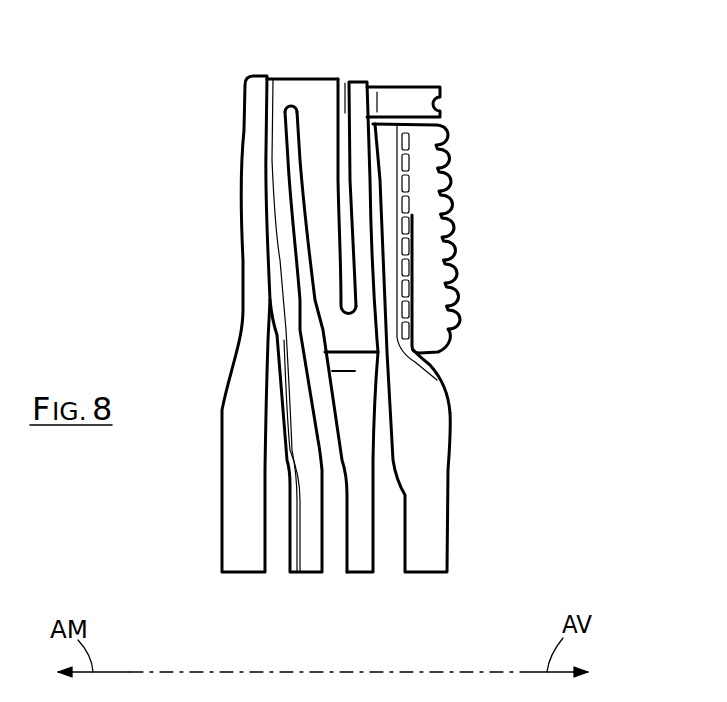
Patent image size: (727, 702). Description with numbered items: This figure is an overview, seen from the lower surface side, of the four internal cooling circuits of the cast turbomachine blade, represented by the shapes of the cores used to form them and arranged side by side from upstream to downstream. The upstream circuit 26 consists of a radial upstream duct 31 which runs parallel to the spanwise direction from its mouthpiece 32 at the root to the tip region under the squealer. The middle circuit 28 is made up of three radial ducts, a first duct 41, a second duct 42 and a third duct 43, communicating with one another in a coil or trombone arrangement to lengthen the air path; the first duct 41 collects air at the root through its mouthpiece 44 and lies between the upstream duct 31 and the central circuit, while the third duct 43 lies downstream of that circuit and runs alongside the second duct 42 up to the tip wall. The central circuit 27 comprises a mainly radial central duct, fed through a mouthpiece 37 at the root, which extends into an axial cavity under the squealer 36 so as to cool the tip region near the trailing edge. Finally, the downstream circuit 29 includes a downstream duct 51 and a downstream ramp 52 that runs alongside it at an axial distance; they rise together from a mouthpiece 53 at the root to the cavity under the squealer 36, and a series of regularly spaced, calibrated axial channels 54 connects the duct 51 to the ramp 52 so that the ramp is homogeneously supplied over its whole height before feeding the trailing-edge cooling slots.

The upstream circuit 26 is at (212, 73).
The central circuit 27 is at (340, 63).
The middle circuit 28 is at (285, 61).
The downstream circuit 29 is at (499, 119).
The radial upstream duct 31 is at (253, 113).
The mouthpiece 32 is at (240, 594).
The cavity under the squealer 36 is at (397, 97).
The mouthpiece 37 is at (372, 596).
The first duct 41 is at (280, 168).
The second duct 42 is at (320, 228).
The third duct 43 is at (362, 278).
The mouthpiece 44 is at (310, 596).
The downstream duct 51 is at (393, 330).
The downstream ramp 52 is at (437, 292).
The mouthpiece 53 is at (433, 594).
The axial channels 54 is at (412, 280).